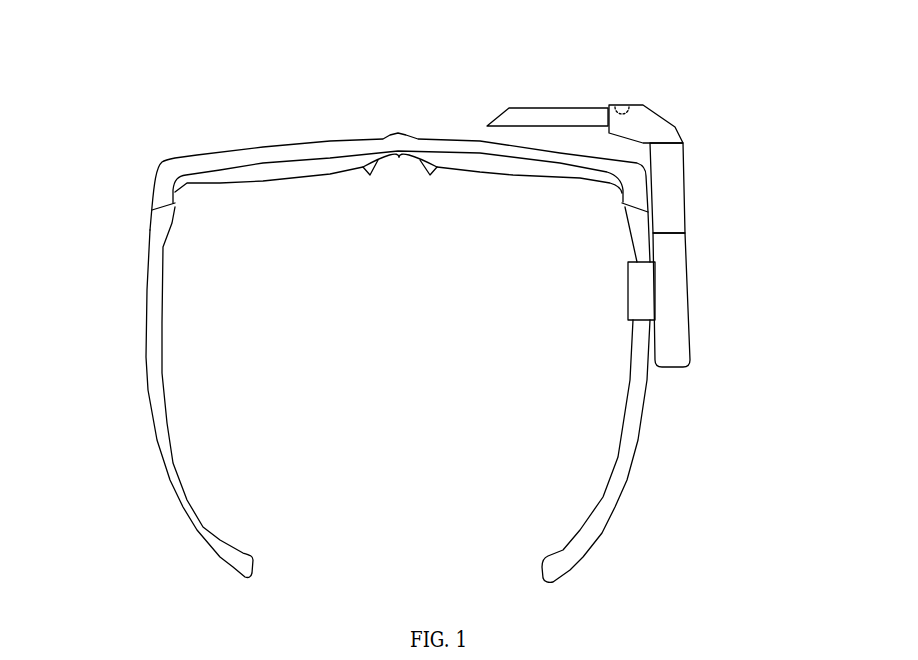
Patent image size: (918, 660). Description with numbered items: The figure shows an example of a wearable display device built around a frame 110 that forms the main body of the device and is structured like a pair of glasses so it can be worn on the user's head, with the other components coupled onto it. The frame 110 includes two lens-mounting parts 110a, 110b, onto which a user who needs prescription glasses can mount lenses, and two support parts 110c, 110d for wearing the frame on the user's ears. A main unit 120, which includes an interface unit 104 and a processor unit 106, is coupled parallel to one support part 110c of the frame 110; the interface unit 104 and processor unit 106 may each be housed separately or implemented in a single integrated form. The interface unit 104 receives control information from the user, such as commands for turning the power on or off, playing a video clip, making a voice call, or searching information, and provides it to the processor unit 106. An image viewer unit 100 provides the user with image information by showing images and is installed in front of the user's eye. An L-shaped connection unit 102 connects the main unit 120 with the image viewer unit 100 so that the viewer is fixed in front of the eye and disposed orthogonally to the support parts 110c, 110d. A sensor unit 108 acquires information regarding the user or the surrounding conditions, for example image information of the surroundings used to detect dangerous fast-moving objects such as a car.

The image viewer unit 100 is at (555, 110).
The connection unit 102 is at (667, 128).
The interface unit 104 is at (725, 300).
The processor unit 106 is at (683, 191).
The sensor unit 108 is at (625, 107).
The frame 110 is at (401, 357).
The lens-mounting part 110a is at (520, 180).
The lens-mounting part 110b is at (292, 178).
The support part 110c is at (622, 477).
The support part 110d is at (160, 390).
The main unit 120 is at (756, 255).